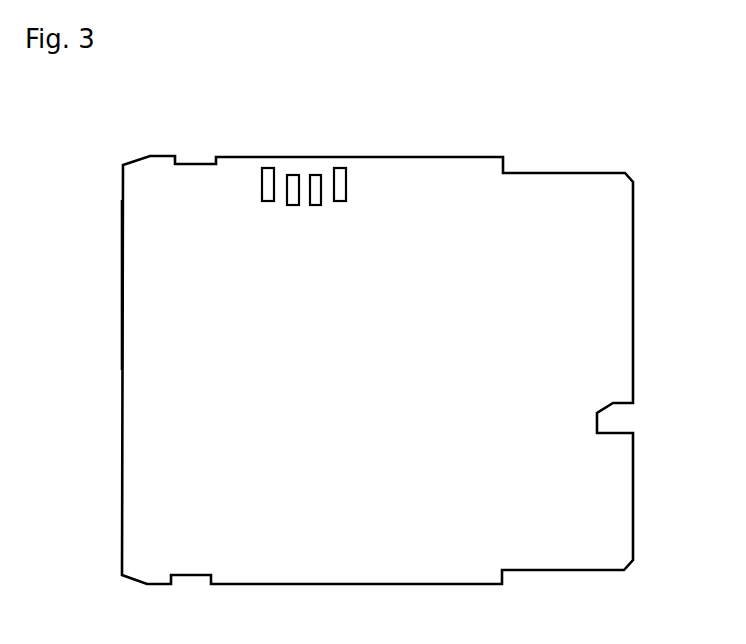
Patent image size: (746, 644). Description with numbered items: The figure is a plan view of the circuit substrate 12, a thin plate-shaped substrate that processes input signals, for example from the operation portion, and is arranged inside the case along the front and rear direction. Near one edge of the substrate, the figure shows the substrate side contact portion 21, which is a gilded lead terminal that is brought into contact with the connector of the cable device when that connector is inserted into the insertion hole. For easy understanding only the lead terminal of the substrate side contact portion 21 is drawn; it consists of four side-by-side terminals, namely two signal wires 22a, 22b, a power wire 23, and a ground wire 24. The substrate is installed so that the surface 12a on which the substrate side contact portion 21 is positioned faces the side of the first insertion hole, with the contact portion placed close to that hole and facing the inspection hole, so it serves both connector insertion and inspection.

The circuit substrate 12 is at (566, 132).
The surface 12a is at (147, 288).
The substrate side contact portion 21 is at (375, 116).
The signal wire 22a is at (292, 175).
The signal wire 22b is at (315, 175).
The power wire 23 is at (267, 168).
The ground (GND) wire 24 is at (340, 168).